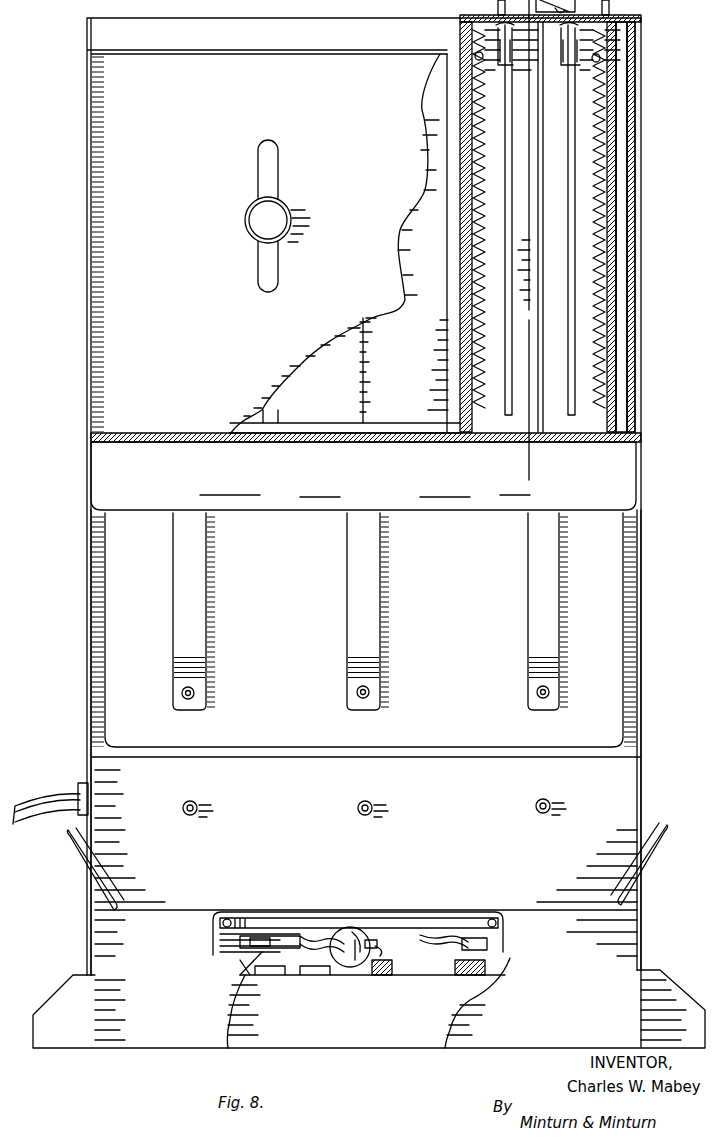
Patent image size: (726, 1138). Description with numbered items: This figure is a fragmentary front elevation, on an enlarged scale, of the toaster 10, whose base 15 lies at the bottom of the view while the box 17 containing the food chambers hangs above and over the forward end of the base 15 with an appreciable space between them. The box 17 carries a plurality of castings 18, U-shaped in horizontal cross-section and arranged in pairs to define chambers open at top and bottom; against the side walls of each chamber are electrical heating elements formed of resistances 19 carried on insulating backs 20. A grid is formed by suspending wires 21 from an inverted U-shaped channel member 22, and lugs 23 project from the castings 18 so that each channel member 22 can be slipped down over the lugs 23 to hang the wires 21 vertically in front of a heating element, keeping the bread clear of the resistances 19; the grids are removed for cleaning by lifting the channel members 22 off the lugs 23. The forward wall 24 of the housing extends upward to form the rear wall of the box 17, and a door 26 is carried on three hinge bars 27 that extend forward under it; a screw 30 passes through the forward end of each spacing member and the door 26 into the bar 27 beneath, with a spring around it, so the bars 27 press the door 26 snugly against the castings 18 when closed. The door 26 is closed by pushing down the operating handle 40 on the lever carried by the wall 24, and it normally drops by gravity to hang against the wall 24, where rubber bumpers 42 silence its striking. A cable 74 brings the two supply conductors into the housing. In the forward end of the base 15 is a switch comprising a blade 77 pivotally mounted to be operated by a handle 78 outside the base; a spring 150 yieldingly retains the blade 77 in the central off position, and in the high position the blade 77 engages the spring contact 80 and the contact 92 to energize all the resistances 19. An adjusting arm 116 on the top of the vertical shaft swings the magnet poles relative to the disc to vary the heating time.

The dispensing machine 10 is at (545, 478).
The base 15 is at (413, 1042).
The box 17 is at (91, 342).
The castings 18 is at (310, 433).
The resistances 19 is at (610, 346).
The insulating backs 20 is at (600, 445).
The wires 21 is at (508, 358).
The channel member 22 is at (497, 14).
The lugs 23 is at (500, 70).
The forward wall 24 is at (628, 783).
The door 26 is at (456, 740).
The hinge bars 27 is at (184, 627).
The screw 30 is at (181, 694).
The operating handle 40 is at (252, 218).
The rubber bumpers 42 is at (198, 804).
The cable 74 is at (46, 805).
The blade 77 is at (376, 946).
The handle 78 is at (350, 975).
The spring contact 80 is at (432, 938).
The contact 92 is at (300, 936).
The adjusting arm 116 is at (566, 240).
The spring 150 is at (395, 962).